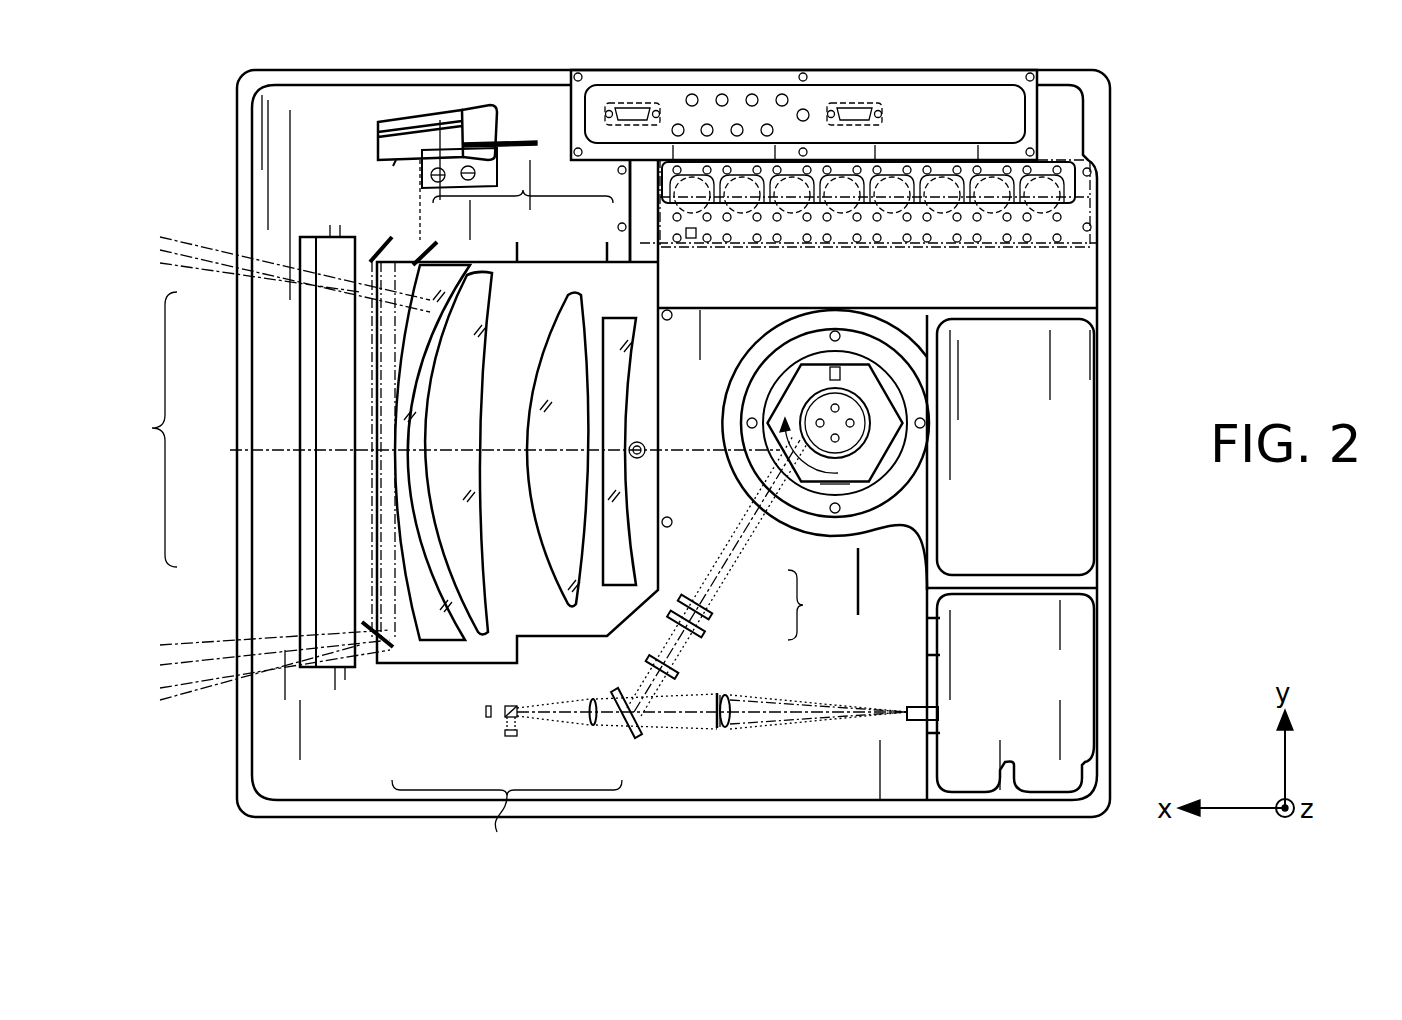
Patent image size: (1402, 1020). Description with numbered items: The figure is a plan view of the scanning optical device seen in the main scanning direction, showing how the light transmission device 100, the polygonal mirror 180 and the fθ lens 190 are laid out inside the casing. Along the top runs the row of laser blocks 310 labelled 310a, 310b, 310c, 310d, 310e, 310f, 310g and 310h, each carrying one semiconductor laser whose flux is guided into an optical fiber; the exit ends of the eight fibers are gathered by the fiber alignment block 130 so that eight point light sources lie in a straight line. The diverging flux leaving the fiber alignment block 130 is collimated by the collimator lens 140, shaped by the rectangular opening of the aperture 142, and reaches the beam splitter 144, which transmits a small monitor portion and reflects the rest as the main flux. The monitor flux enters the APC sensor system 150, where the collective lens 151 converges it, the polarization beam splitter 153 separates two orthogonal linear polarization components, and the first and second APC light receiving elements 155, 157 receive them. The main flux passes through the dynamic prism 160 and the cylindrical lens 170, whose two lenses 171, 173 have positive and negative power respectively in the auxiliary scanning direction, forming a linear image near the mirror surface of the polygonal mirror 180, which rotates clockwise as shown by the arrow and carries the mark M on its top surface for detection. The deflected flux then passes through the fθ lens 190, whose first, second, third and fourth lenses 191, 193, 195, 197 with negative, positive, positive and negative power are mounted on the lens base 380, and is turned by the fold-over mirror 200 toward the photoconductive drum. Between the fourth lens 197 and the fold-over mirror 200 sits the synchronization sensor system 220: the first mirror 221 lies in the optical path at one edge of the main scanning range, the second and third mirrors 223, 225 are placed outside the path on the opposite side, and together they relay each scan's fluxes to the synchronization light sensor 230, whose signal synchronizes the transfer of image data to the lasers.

The light transmission device 100 is at (1143, 218).
The fiber alignment block 130 is at (938, 700).
The collimator lens 140 is at (730, 722).
The aperture 142 is at (718, 730).
The beam splitter 144 is at (640, 738).
The APC sensor system 150 is at (649, 772).
The collective lens 151 is at (596, 725).
The polarization beam splitter 153 is at (505, 735).
The first APC light receiving element 155 is at (488, 718).
The second APC light receiving element 157 is at (520, 720).
The dynamic prism 160 is at (678, 665).
The cylindrical lens 170 is at (760, 605).
The first lens of cylindrical lens 171 is at (702, 632).
The second lens of cylindrical lens 173 is at (712, 606).
The polygonal mirror 180 is at (861, 450).
The mark M is at (842, 368).
The fθ lens 190 is at (495, 172).
The first lens 191 is at (618, 318).
The second lens 193 is at (572, 296).
The third lens 195 is at (480, 276).
The fourth lens 197 is at (445, 268).
The fold-over mirror 200 is at (333, 668).
The synchronization sensor system 220 is at (267, 468).
The first mirror 221 is at (370, 630).
The second mirror 223 is at (375, 258).
The third mirror 225 is at (418, 262).
The synchronization light sensor 230 is at (396, 160).
The laser block 310 is at (1082, 187).
The laser block 310a is at (705, 216).
The laser block 310b is at (742, 218).
The laser block 310c is at (790, 216).
The laser block 310d is at (840, 218).
The laser block 310e is at (890, 216).
The laser block 310f is at (940, 218).
The laser block 310g is at (990, 216).
The laser block 310h is at (1040, 218).
The lens base 380 is at (698, 383).